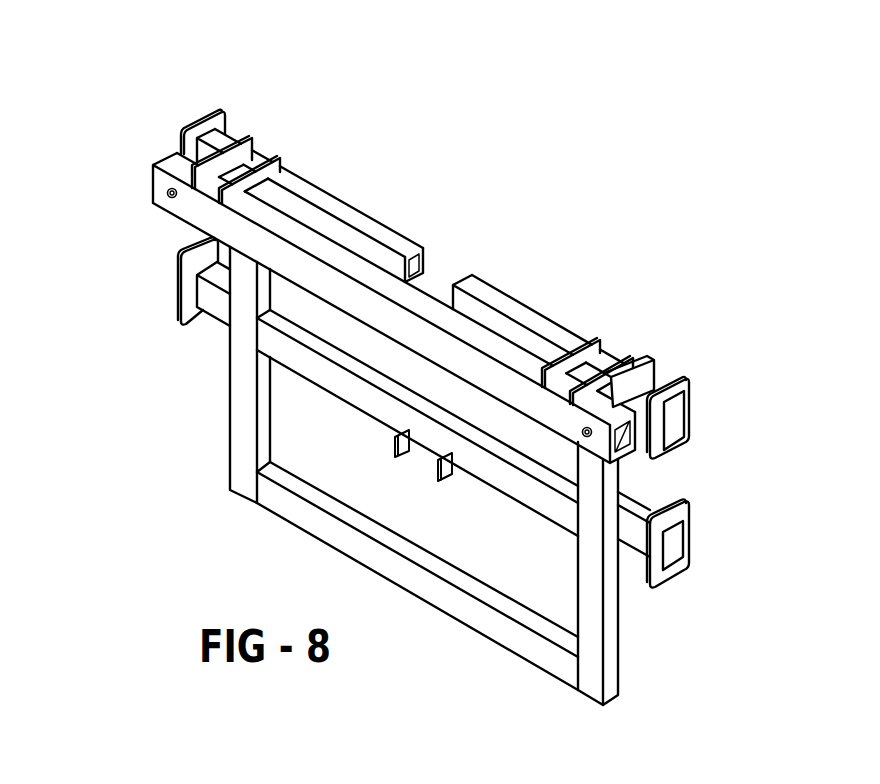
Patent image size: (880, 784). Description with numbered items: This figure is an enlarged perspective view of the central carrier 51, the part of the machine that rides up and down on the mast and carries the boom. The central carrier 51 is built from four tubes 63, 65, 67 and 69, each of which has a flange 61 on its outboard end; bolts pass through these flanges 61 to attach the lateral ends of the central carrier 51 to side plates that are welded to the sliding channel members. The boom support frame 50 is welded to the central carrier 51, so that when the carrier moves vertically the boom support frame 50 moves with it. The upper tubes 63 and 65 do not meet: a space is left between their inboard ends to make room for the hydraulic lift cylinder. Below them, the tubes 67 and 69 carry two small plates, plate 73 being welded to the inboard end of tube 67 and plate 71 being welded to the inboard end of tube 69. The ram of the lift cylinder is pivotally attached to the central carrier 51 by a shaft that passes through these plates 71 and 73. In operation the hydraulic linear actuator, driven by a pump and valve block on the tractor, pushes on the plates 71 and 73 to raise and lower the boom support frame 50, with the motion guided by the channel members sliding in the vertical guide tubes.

The boom support frame 50 is at (203, 212).
The central carrier 51 is at (453, 207).
The flanges 61 is at (196, 118).
The tube 63 is at (381, 233).
The tube 65 is at (524, 312).
The tube 67 is at (217, 303).
The tube 69 is at (648, 511).
The plate 71 is at (452, 478).
The plate 73 is at (396, 441).